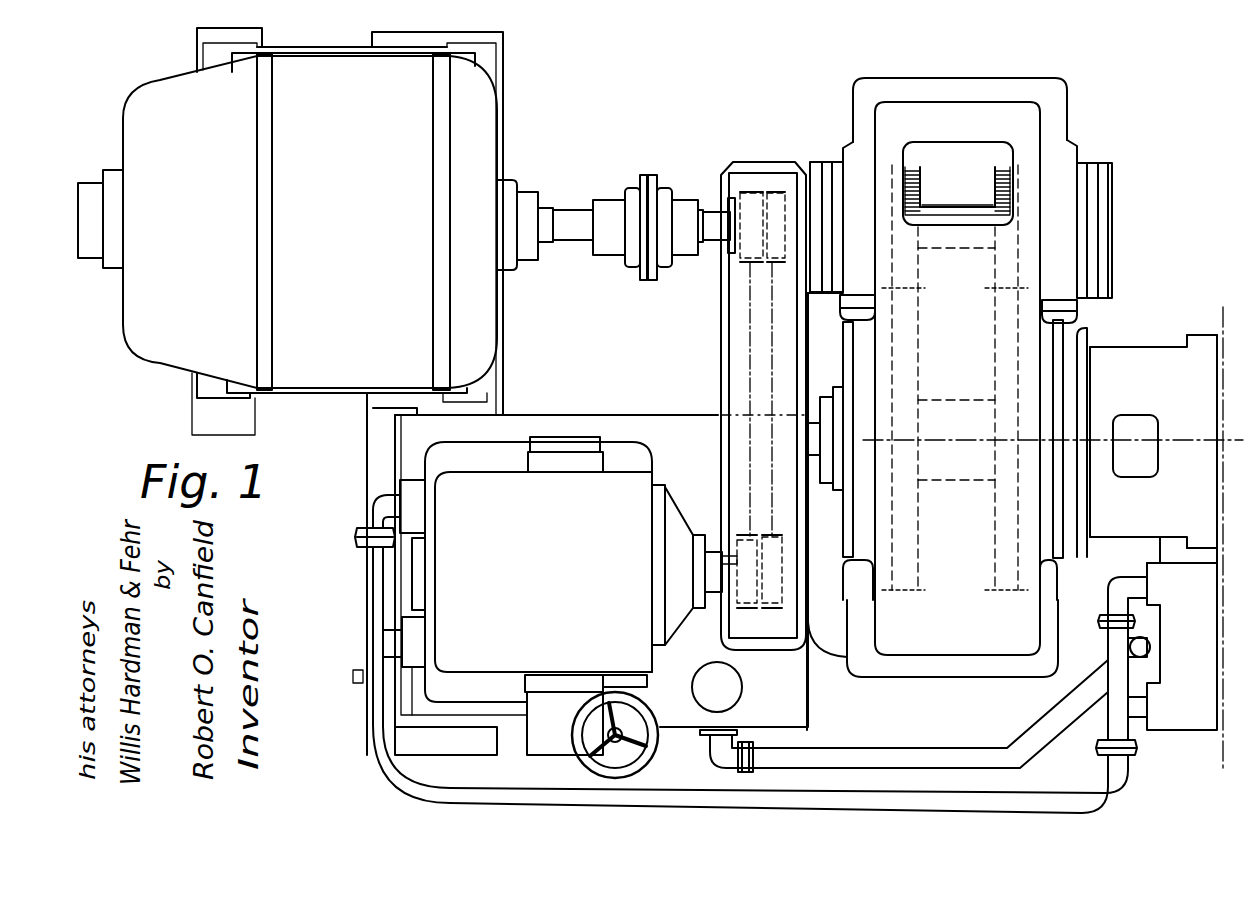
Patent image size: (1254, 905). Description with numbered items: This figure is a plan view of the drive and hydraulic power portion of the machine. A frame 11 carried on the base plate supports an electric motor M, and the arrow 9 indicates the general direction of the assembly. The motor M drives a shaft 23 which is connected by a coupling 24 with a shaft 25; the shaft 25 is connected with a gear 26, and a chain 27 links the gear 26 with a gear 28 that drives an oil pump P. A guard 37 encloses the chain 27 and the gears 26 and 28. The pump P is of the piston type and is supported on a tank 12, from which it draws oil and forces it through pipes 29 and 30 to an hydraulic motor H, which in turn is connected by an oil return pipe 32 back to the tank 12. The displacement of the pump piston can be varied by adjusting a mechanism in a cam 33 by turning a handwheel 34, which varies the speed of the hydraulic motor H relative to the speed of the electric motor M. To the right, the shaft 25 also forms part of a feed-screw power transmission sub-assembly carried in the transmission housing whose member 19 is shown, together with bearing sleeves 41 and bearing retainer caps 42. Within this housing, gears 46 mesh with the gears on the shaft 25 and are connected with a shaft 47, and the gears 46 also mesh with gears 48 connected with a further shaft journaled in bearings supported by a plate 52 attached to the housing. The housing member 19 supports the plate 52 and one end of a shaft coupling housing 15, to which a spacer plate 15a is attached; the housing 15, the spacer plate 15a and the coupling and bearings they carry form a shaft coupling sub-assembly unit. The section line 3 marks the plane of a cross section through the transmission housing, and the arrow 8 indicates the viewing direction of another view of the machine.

The electric motor M is at (142, 80).
The pumping unit 9 is at (132, 371).
The frame 11 is at (197, 44).
The tank 12 is at (578, 413).
The oil pump P is at (650, 481).
The shaft 23 is at (576, 200).
The coupling 24 is at (643, 175).
The shaft 25 is at (712, 212).
The gear 26 is at (779, 192).
The chain 27 is at (750, 380).
The gear 28 is at (748, 613).
The guard 37 is at (721, 346).
The transmission housing member 19 is at (975, 102).
The bearing sleeves 41 is at (832, 162).
The bearing retainer caps 42 is at (815, 162).
The gears 46 is at (997, 168).
The shaft 47 is at (972, 196).
The gears 48 is at (995, 343).
The plate 52 is at (840, 313).
The shaft coupling housing 15 is at (1148, 347).
The spacer plate 15a is at (1212, 335).
The section line 3- 3 is at (863, 440).
The pipe 29 is at (372, 585).
The pipe 30 is at (393, 642).
The oil return pipe 32 is at (920, 748).
The cam 33 is at (530, 757).
The handwheel 34 is at (668, 690).
The direction arrow 8 is at (954, 702).
The hydraulic motor H is at (1197, 733).